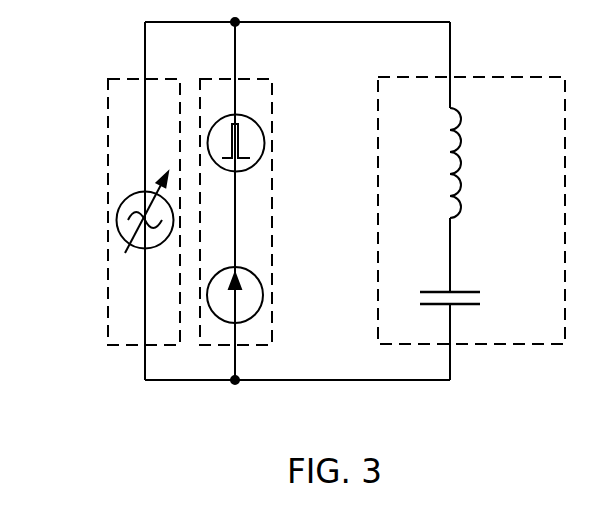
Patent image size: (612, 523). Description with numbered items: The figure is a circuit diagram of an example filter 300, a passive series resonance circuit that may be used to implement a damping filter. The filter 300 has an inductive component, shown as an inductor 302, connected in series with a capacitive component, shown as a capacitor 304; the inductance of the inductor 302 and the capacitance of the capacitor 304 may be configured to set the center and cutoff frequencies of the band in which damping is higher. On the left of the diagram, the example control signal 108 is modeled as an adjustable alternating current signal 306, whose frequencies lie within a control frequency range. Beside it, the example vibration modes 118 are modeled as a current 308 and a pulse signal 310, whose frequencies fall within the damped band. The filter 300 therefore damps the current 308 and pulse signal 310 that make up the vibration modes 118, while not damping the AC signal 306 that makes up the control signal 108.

The control signal 108 is at (108, 79).
The vibration mode(s) 118 is at (272, 113).
The filter 300 is at (372, 69).
The inductor 302 is at (462, 142).
The capacitor 304 is at (467, 290).
The adjustable alternating current (AC) signal 306 is at (124, 200).
The current 308 is at (257, 277).
The pulse signal 310 is at (260, 160).